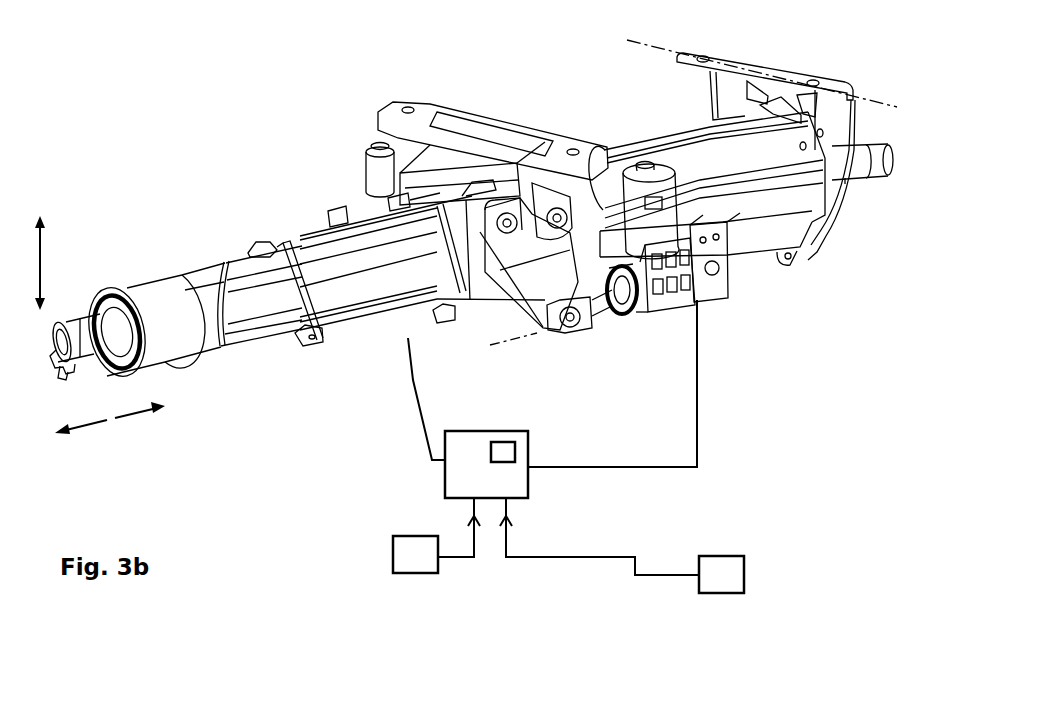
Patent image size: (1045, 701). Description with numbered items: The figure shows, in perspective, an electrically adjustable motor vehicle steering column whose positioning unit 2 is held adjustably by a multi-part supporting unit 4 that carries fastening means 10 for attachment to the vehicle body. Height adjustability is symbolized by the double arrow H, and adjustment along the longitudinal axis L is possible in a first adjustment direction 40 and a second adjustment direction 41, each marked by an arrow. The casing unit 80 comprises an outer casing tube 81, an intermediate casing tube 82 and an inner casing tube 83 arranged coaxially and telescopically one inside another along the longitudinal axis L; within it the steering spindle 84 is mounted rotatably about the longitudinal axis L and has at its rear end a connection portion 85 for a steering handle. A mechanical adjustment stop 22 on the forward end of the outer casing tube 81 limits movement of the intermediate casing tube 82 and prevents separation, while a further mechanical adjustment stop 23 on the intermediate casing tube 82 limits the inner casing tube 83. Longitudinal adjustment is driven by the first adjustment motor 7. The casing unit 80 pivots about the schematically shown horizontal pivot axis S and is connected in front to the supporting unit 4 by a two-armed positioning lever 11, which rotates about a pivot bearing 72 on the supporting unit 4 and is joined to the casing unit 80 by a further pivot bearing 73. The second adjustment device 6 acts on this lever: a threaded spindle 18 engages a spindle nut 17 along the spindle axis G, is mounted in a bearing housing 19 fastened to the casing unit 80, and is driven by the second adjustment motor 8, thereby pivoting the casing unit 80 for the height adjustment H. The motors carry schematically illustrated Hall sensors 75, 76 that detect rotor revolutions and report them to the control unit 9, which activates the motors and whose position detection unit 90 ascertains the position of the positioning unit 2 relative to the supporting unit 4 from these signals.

The positioning unit 2 is at (285, 404).
The supporting unit 4 is at (765, 74).
The second adjustment device 6 is at (653, 336).
The first adjustment motor 7 is at (372, 168).
The second adjustment motor 8 is at (700, 300).
The control unit 9 is at (457, 430).
The fastening means 10 is at (703, 55).
The positioning lever 11 is at (530, 283).
The spindle nut 17 is at (637, 318).
The threaded spindle 18 is at (612, 311).
The bearing housing 19 is at (675, 318).
The mechanical adjustment stop 22 is at (387, 196).
The further mechanical adjustment stop 23 is at (247, 247).
The first adjustment direction 40 is at (135, 417).
The second adjustment direction 41 is at (88, 430).
The pivot bearing 72 is at (559, 210).
The further pivot bearing 73 is at (509, 216).
The Hall sensor 75 is at (402, 553).
The Hall sensor 76 is at (664, 203).
The casing unit 80 is at (762, 238).
The outer casing tube 81 is at (707, 160).
The intermediate casing tube 82 is at (393, 292).
The inner casing tube 83 is at (258, 316).
The steering spindle 84 is at (118, 318).
The connection portion 85 is at (82, 326).
The position detection unit 90 is at (512, 452).
The spindle axis G is at (513, 348).
The height adjustment H is at (45, 242).
The longitudinal axis L is at (884, 160).
The pivot axis S is at (893, 104).